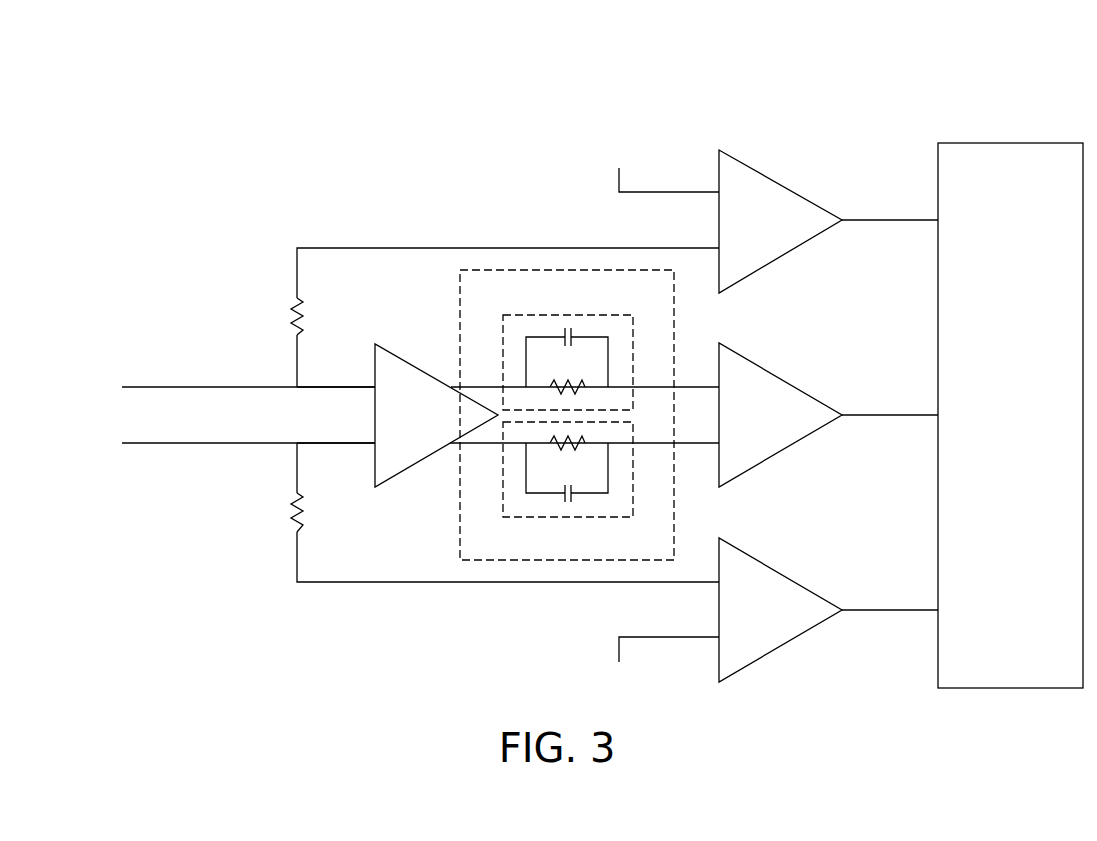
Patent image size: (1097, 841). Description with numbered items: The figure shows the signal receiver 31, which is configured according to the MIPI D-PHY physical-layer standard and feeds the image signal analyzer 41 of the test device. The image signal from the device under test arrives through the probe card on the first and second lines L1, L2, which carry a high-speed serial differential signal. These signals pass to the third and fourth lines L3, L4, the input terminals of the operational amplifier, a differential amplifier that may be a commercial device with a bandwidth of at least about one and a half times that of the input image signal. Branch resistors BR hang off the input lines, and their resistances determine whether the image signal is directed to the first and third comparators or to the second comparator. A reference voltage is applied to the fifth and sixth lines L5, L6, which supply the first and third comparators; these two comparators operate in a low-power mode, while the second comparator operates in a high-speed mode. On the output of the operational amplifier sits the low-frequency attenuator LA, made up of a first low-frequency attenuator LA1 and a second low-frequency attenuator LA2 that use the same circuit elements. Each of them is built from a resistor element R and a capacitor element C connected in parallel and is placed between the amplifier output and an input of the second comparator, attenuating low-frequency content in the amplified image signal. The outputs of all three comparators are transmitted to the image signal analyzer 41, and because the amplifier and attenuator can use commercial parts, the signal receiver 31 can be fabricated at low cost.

The signal receiver 31 is at (435, 135).
The image signal analyzer 41 is at (1008, 143).
The first line L1 is at (160, 385).
The second line L2 is at (160, 445).
The third line L3 is at (333, 385).
The fourth line L4 is at (333, 445).
The fifth line L5 is at (617, 179).
The sixth line L6 is at (617, 655).
The branch resistor BR is at (292, 307).
The low-frequency attenuator LA is at (457, 309).
The first low-frequency attenuator LA1 is at (617, 518).
The second low-frequency attenuator LA2 is at (617, 314).
The capacitor element C is at (563, 326).
The resistor element R is at (578, 383).